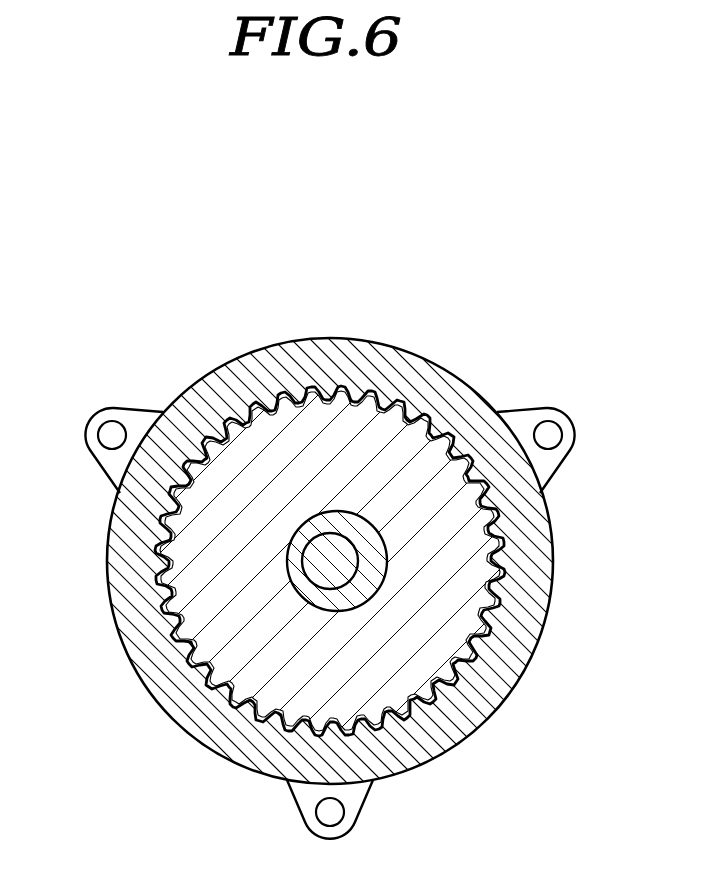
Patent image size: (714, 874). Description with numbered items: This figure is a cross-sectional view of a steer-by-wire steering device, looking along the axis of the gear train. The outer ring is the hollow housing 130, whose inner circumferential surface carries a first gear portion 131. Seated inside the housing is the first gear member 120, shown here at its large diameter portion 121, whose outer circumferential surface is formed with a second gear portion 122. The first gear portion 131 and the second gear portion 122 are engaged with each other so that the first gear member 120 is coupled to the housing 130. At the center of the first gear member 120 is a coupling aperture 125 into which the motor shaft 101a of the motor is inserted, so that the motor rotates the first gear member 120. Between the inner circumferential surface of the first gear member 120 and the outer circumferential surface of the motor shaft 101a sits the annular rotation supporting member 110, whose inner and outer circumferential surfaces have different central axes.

The annular rotation supporting member 110 is at (291, 570).
The hollow housing 130 is at (350, 347).
The first gear portion 131 is at (410, 408).
The second gear portion 122 is at (490, 603).
The first gear member 120 is at (357, 563).
The large diameter portion 121 is at (407, 650).
The coupling aperture 125 is at (289, 560).
The motor shaft 101a is at (330, 570).